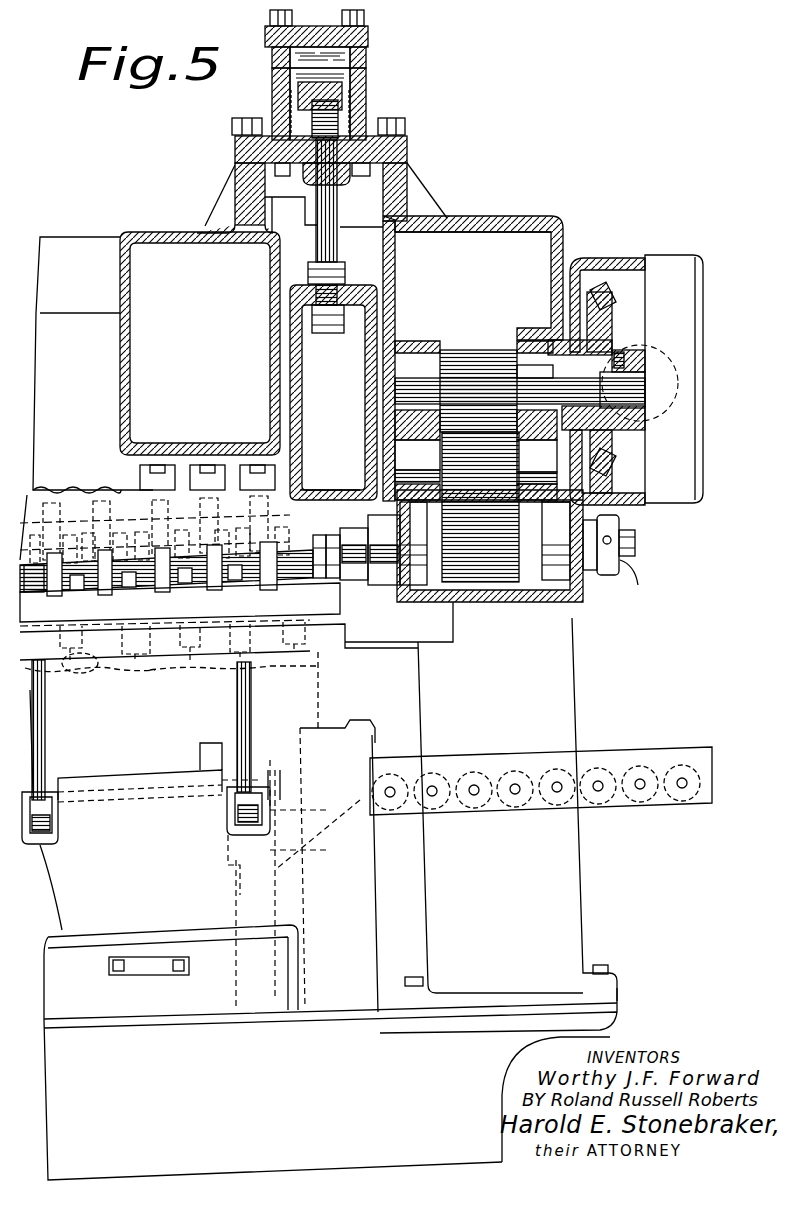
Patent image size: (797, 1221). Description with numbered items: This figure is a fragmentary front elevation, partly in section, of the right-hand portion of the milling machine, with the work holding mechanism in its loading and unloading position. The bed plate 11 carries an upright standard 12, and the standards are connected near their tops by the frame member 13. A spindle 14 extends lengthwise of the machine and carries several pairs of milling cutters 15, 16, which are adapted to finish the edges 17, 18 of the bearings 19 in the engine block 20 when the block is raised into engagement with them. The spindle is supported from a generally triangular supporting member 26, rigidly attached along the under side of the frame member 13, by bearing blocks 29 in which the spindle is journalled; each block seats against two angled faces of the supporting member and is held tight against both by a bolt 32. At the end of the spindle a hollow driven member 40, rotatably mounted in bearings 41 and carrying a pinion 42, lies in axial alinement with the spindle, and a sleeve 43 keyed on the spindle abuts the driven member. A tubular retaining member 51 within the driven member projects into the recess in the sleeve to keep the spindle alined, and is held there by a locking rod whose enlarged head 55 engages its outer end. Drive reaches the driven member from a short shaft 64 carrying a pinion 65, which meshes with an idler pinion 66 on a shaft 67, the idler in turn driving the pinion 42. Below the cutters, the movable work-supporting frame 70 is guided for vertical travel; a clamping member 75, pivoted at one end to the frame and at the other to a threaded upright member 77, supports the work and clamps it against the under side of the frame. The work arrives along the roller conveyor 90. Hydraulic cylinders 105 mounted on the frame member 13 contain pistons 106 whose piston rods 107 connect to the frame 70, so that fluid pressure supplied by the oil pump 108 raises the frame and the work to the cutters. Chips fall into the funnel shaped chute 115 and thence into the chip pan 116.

The bed plate 11 is at (290, 1050).
The upright standard 12 is at (582, 903).
The frame member 13 is at (140, 234).
The spindle 14 is at (304, 548).
The milling cutter 15 is at (100, 594).
The milling cutter 16 is at (150, 594).
The bearing edge 17 is at (52, 690).
The bearing edge 18 is at (98, 688).
The bearing 19 is at (160, 688).
The engine block 20 is at (324, 685).
The supporting member 26 is at (296, 492).
The bearing block 29 is at (54, 593).
The bolt 32 is at (33, 588).
The driven member 40 is at (536, 545).
The bearing 41 is at (485, 543).
The pinion 42 is at (496, 582).
The sleeve 43 is at (342, 535).
The retaining member 51 is at (644, 570).
The enlarged head 55 is at (636, 540).
The short shaft 64 is at (520, 383).
The pinion 65 is at (472, 352).
The idler pinion 66 is at (520, 461).
The shaft 67 is at (417, 455).
The work-supporting frame 70 is at (318, 388).
The clamping member 75 is at (58, 832).
The member 77 is at (46, 740).
The roller conveyor 90 is at (608, 757).
The hydraulic cylinder 105 is at (366, 72).
The piston 106 is at (368, 100).
The piston rod 107 is at (328, 213).
The oil pump 108 is at (365, 725).
The funnel shaped chute 115 is at (209, 876).
The chip pan 116 is at (100, 992).